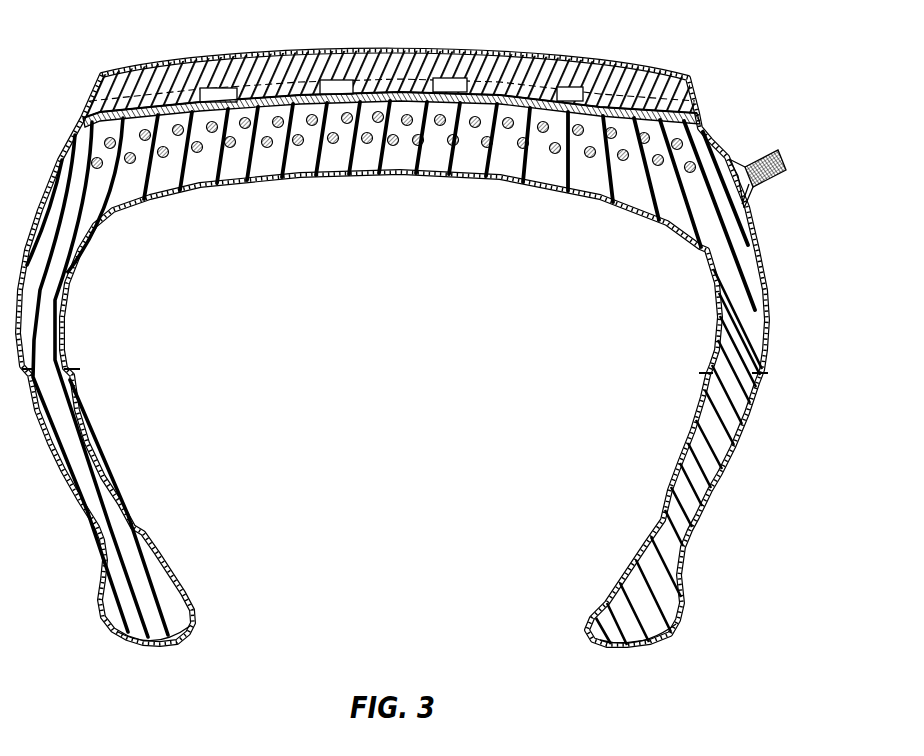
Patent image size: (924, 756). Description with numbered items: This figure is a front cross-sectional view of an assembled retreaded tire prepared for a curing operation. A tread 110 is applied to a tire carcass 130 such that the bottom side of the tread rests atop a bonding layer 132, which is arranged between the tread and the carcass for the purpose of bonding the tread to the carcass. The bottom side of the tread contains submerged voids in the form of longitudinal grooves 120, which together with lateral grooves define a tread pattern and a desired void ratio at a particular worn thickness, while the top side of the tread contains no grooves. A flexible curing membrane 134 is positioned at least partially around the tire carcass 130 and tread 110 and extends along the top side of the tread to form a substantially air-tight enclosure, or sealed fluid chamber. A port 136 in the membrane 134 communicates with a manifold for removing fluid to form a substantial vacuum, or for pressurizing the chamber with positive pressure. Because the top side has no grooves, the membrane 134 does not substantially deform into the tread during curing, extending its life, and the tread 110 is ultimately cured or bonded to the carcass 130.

The tread 110 is at (507, 73).
The longitudinal grooves 120 is at (324, 86).
The tire carcass 130 is at (717, 457).
The bonding layer 132 is at (700, 124).
The curing membrane 134 is at (662, 74).
The port 136 is at (780, 177).